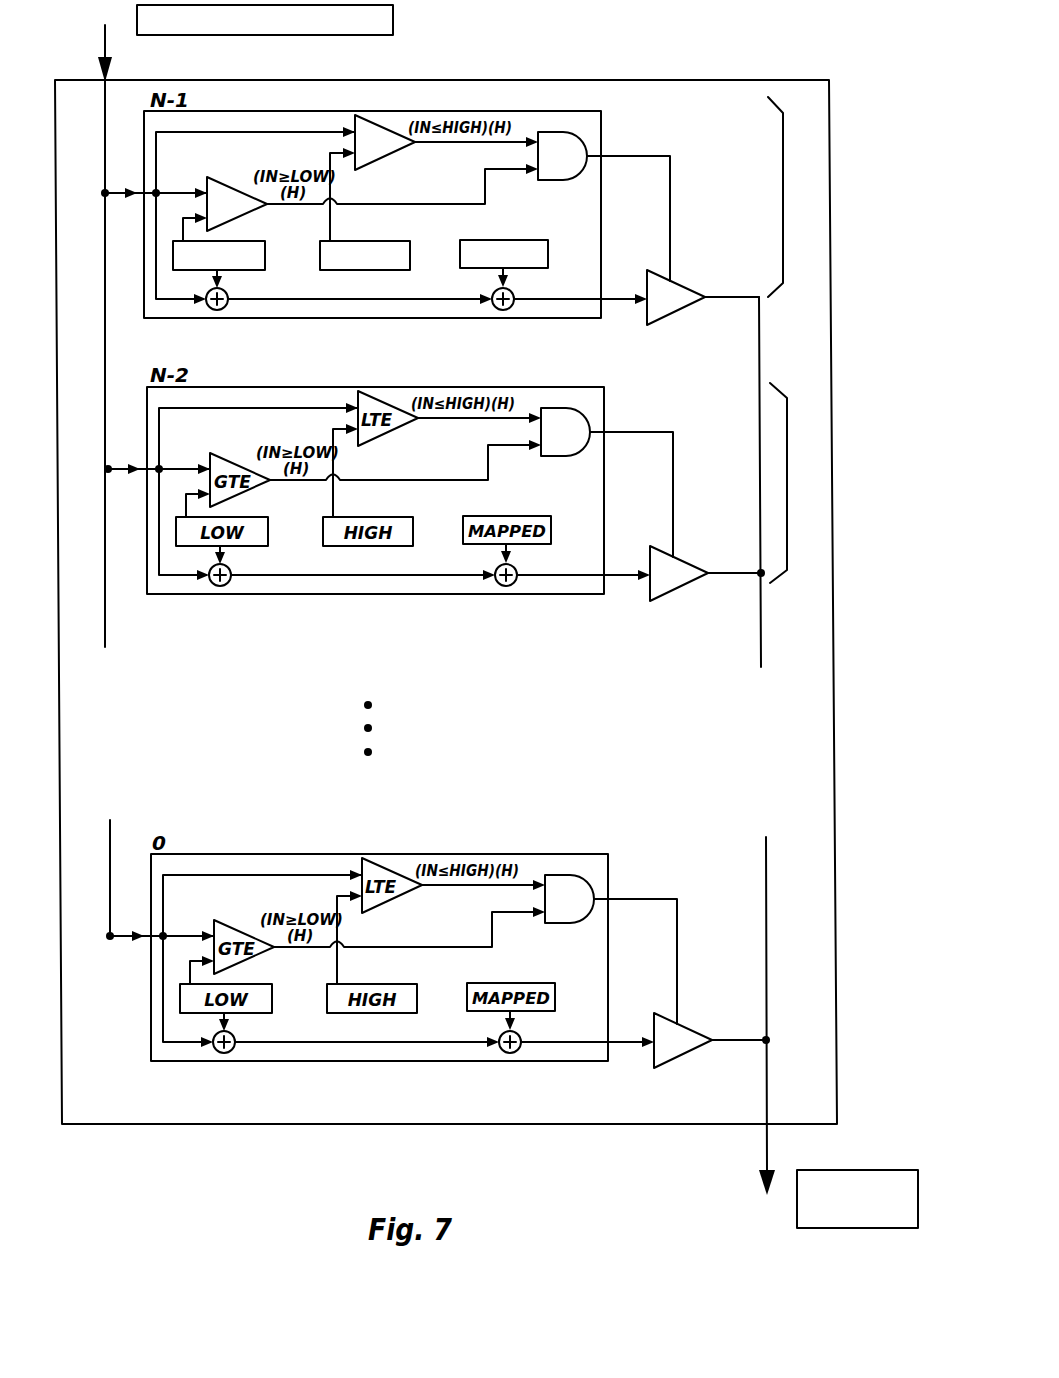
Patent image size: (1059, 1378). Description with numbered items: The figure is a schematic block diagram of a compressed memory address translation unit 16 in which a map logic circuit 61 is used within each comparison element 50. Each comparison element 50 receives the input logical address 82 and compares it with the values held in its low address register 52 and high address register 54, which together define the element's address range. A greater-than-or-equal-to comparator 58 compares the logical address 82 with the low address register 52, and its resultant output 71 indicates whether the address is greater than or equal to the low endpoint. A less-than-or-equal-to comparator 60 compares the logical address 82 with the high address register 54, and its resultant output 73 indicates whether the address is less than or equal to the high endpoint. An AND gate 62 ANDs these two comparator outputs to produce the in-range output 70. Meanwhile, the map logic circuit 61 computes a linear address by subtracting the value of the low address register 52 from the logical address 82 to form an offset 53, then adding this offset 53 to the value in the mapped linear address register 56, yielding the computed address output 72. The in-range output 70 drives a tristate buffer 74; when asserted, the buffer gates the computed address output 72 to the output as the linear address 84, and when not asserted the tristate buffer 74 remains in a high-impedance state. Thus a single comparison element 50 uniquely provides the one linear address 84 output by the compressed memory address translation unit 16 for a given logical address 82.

The compressed memory address translation unit 16 is at (788, 65).
The comparison element 50 is at (608, 120).
The low address register 52 is at (252, 248).
The offset 53 is at (262, 298).
The high address register 54 is at (397, 247).
The mapped linear address register 56 is at (493, 240).
The greater-than-or-equal-to comparator 58 is at (217, 185).
The less-than-or-equal-to comparator 60 is at (365, 128).
The map logic circuit 61 is at (783, 160).
The AND gate 62 is at (562, 156).
The in-range output 70 is at (672, 155).
The resultant output 71 is at (378, 203).
The computed address output 72 is at (575, 297).
The resultant output 73 is at (505, 140).
The tristate buffer 74 is at (680, 290).
The logical address 82 is at (105, 44).
The linear address 84 is at (767, 1150).